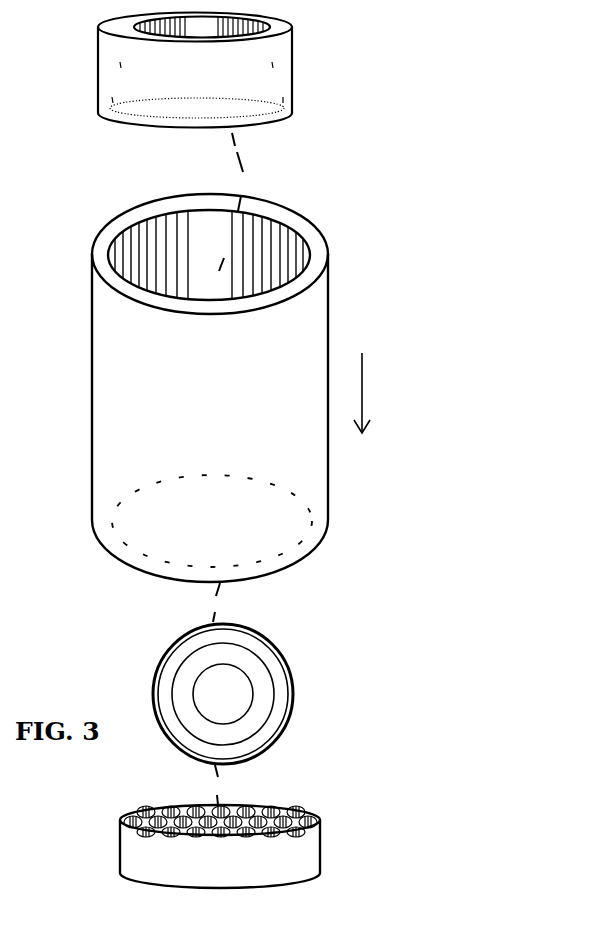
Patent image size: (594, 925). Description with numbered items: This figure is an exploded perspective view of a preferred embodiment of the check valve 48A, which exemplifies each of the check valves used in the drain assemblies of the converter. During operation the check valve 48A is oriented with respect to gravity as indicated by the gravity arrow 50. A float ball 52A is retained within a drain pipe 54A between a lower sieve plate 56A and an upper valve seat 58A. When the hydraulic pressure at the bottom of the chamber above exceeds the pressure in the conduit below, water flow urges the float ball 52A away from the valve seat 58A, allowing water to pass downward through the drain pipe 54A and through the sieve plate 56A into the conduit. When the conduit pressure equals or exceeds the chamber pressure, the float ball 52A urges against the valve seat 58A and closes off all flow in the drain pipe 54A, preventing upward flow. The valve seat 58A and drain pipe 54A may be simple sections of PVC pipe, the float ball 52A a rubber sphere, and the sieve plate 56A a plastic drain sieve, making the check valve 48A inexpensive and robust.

The valve seat 58A is at (292, 104).
The drain pipe 54A is at (328, 513).
The float ball 52A is at (293, 690).
The sieve plate 56A is at (320, 855).
The gravity arrow 50 is at (362, 400).
The check valve 48A is at (488, 443).